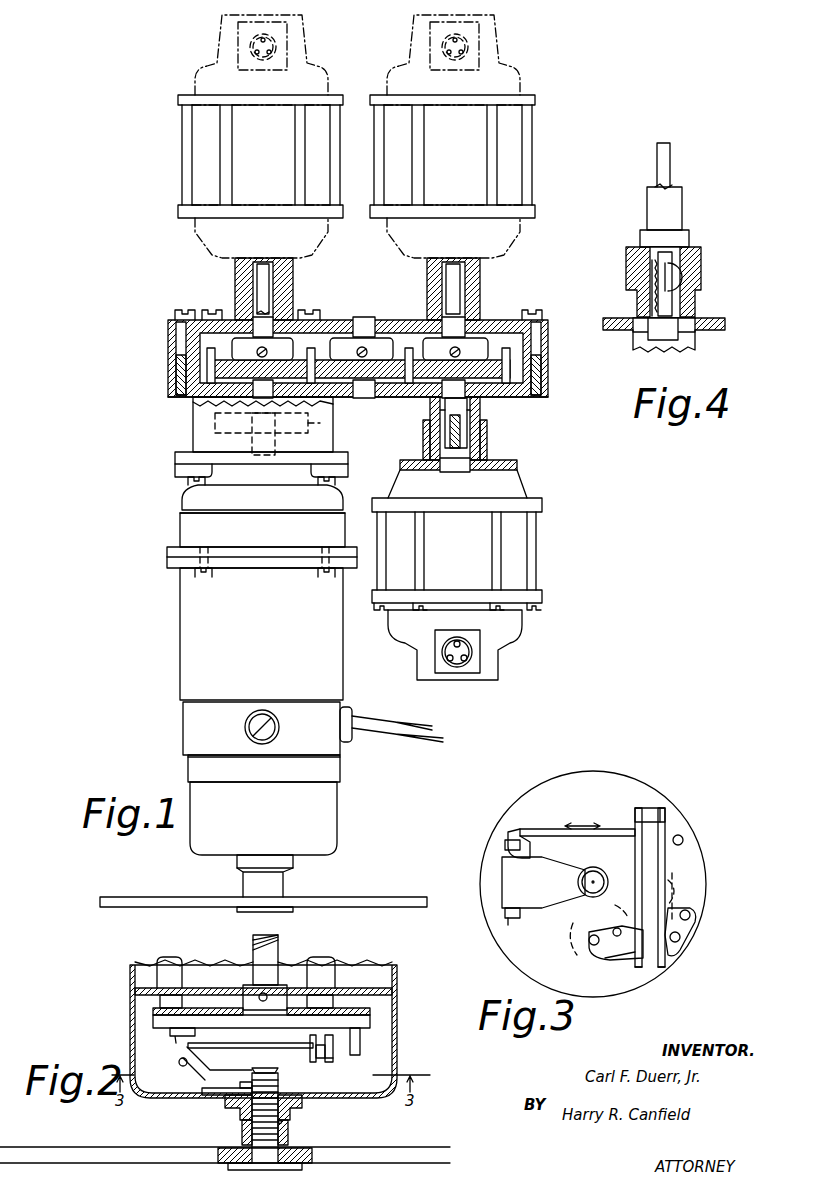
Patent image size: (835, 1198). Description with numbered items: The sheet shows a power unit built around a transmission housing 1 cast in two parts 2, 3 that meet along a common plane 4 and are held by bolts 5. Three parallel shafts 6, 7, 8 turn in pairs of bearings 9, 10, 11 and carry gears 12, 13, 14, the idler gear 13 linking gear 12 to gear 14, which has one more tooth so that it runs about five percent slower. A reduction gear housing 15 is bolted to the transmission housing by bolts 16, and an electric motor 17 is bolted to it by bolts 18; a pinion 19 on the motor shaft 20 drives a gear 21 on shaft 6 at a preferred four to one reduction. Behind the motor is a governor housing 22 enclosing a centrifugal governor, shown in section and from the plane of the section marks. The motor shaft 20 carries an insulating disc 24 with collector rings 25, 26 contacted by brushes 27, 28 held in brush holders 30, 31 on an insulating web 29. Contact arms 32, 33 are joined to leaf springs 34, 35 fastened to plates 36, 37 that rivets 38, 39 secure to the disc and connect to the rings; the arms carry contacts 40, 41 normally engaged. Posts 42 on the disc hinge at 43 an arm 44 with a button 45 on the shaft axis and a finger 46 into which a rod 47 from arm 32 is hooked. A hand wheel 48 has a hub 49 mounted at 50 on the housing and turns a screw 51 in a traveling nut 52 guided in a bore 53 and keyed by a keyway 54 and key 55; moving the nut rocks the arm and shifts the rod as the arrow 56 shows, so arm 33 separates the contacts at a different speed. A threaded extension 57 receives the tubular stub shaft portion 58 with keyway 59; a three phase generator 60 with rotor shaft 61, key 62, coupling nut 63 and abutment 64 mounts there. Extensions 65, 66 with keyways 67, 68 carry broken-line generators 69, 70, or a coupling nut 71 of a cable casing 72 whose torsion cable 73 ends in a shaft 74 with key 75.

In FIG. 1, the transmission housing 1 is at (347, 347).
In FIG. 1, the housing part 2 is at (351, 353).
In FIG. 1, the housing part 3 is at (168, 393).
In FIG. 1, the common plane 4 is at (168, 355).
In FIG. 1, the bolts 5 is at (548, 322).
In FIG. 1, the shaft 6 is at (263, 358).
In FIG. 1, the shaft 7 is at (364, 358).
In FIG. 1, the shaft 8 is at (453, 358).
In FIG. 4, the shaft 8 is at (665, 342).
In FIG. 1, the bearings 9 is at (271, 352).
In FIG. 1, the bearings 10 is at (361, 349).
In FIG. 1, the bearings 11 is at (455, 349).
In FIG. 1, the gear 12 is at (262, 349).
In FIG. 1, the idler gear 13 is at (373, 352).
In FIG. 1, the gear 14 is at (467, 352).
In FIG. 1, the reduction gear housing 15 is at (193, 418).
In FIG. 1, the bolts 16 is at (212, 310).
In FIG. 1, the electric motor 17 is at (305, 633).
In FIG. 1, the bolts 18 is at (185, 450).
In FIG. 1, the pinion 19 is at (261, 423).
In FIG. 1, the motor shaft 20 is at (251, 434).
In FIG. 2, the motor shaft 20 is at (276, 945).
In FIG. 1, the gear 21 is at (320, 423).
In FIG. 1, the governor housing 22 is at (338, 810).
In FIG. 2, the governor housing 22 is at (397, 1058).
In FIG. 3, the disc 24 is at (698, 857).
In FIG. 2, the disc 24 is at (370, 1021).
In FIG. 3, the collector ring 25 is at (708, 882).
In FIG. 2, the collector ring 25 is at (370, 1012).
In FIG. 3, the collector ring 26 is at (599, 921).
In FIG. 2, the collector ring 26 is at (305, 1010).
In FIG. 2, the brush 27 is at (180, 1000).
In FIG. 2, the brush 28 is at (327, 1003).
In FIG. 2, the insulating web 29 is at (230, 992).
In FIG. 2, the brush holder 30 is at (170, 955).
In FIG. 2, the brush holder 31 is at (330, 956).
In FIG. 3, the contact arm 32 is at (635, 814).
In FIG. 2, the contact arm 32 is at (313, 1062).
In FIG. 3, the contact arm 33 is at (665, 815).
In FIG. 2, the contact arm 33 is at (333, 1062).
In FIG. 3, the leaf spring 34 is at (640, 967).
In FIG. 3, the leaf spring 35 is at (661, 967).
In FIG. 3, the plate 36 is at (625, 956).
In FIG. 3, the plate 37 is at (682, 950).
In FIG. 3, the rivets 38 is at (612, 930).
In FIG. 3, the rivets 39 is at (690, 915).
In FIG. 3, the electric contact 40 is at (645, 808).
In FIG. 2, the electric contact 40 is at (320, 1058).
In FIG. 3, the electric contact 41 is at (662, 808).
In FIG. 2, the electric contact 41 is at (330, 1060).
In FIG. 3, the upstanding posts 42 is at (505, 845).
In FIG. 2, the upstanding posts 42 is at (172, 1040).
In FIG. 3, the hinge 43 is at (510, 920).
In FIG. 2, the hinge 43 is at (178, 1061).
In FIG. 3, the arm 44 is at (555, 882).
In FIG. 2, the arm 44 is at (245, 1070).
In FIG. 2, the button 45 is at (264, 1068).
In FIG. 3, the finger 46 is at (530, 848).
In FIG. 2, the finger 46 is at (205, 1075).
In FIG. 3, the rod 47 is at (547, 829).
In FIG. 2, the rod 47 is at (257, 1041).
In FIG. 1, the adjusting hand wheel 48 is at (382, 897).
In FIG. 2, the adjusting hand wheel 48 is at (412, 1150).
In FIG. 2, the hub 49 is at (240, 1118).
In FIG. 2, the mounting 50 is at (225, 1102).
In FIG. 2, the screw 51 is at (242, 1135).
In FIG. 2, the traveling nut 52 is at (282, 1122).
In FIG. 2, the bore 53 is at (288, 1140).
In FIG. 2, the keyway 54 is at (245, 1082).
In FIG. 2, the key 55 is at (227, 1082).
In FIG. 3, the arrow 56 is at (582, 815).
In FIG. 1, the tubular externally threaded extension 57 is at (470, 410).
In FIG. 1, the stub shaft portion 58 is at (430, 418).
In FIG. 1, the keyway 59 is at (480, 425).
In FIG. 1, the electric generator 60 is at (522, 522).
In FIG. 1, the rotor shaft 61 is at (445, 468).
In FIG. 1, the key 62 is at (482, 442).
In FIG. 1, the coupling nut 63 is at (423, 444).
In FIG. 1, the abutment 64 is at (465, 468).
In FIG. 1, the extension 65 is at (469, 289).
In FIG. 4, the extension 65 is at (680, 306).
In FIG. 1, the extension 66 is at (278, 289).
In FIG. 1, the keyway 67 is at (463, 272).
In FIG. 4, the keyway 67 is at (700, 296).
In FIG. 1, the keyway 68 is at (275, 272).
In FIG. 1, the electric generator 69 is at (518, 235).
In FIG. 1, the electric generator 70 is at (195, 232).
In FIG. 4, the coupling nut 71 is at (700, 266).
In FIG. 4, the cable casing 72 is at (682, 218).
In FIG. 4, the torsion cable 73 is at (670, 177).
In FIG. 4, the shaft 74 is at (652, 290).
In FIG. 4, the key 75 is at (690, 280).